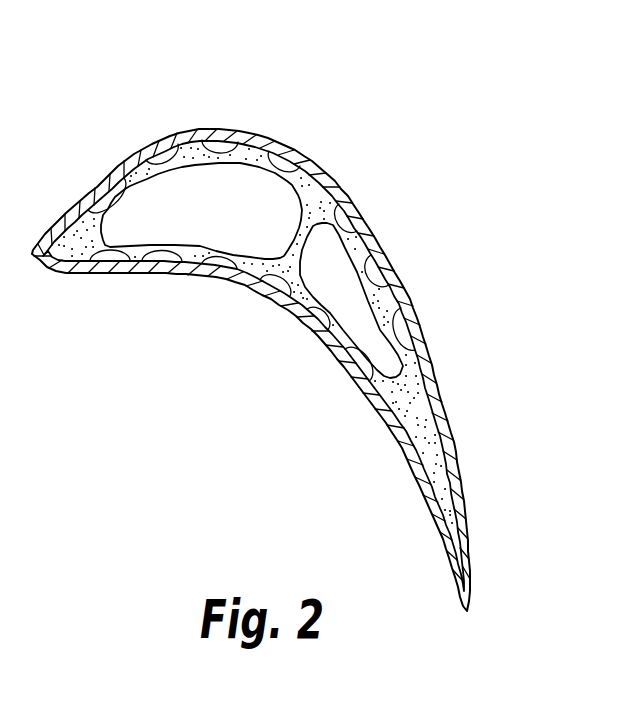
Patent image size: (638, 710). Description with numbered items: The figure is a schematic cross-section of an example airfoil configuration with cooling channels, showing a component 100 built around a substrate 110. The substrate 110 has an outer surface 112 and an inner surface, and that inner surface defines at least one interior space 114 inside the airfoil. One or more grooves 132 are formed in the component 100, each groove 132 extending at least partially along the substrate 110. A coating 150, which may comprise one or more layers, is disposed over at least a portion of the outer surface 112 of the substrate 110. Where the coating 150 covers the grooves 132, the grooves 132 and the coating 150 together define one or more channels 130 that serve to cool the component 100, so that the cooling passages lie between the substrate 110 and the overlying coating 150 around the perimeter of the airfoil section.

The component 100 is at (452, 140).
The substrate 110 is at (312, 199).
The outer surface 112 is at (419, 411).
The interior space 114 is at (243, 202).
The channels 130 is at (176, 136).
The grooves 132 is at (318, 314).
The coating 150 is at (396, 281).